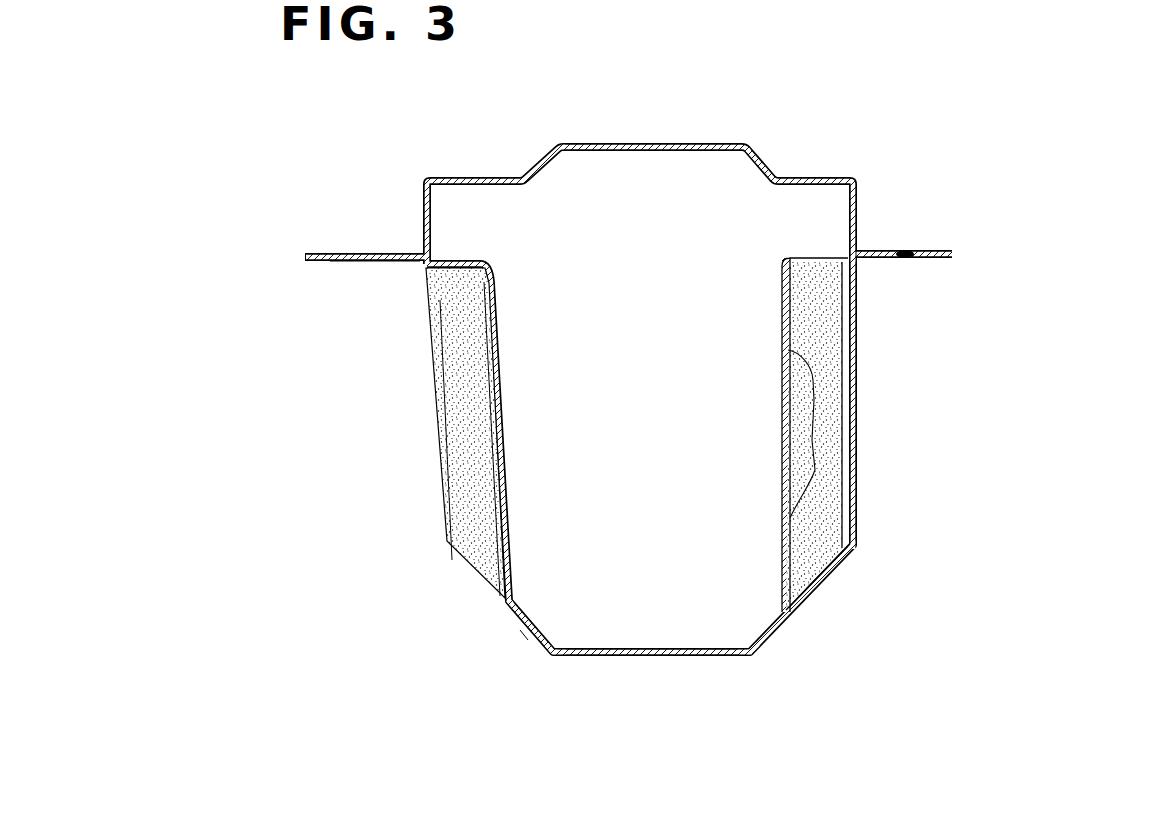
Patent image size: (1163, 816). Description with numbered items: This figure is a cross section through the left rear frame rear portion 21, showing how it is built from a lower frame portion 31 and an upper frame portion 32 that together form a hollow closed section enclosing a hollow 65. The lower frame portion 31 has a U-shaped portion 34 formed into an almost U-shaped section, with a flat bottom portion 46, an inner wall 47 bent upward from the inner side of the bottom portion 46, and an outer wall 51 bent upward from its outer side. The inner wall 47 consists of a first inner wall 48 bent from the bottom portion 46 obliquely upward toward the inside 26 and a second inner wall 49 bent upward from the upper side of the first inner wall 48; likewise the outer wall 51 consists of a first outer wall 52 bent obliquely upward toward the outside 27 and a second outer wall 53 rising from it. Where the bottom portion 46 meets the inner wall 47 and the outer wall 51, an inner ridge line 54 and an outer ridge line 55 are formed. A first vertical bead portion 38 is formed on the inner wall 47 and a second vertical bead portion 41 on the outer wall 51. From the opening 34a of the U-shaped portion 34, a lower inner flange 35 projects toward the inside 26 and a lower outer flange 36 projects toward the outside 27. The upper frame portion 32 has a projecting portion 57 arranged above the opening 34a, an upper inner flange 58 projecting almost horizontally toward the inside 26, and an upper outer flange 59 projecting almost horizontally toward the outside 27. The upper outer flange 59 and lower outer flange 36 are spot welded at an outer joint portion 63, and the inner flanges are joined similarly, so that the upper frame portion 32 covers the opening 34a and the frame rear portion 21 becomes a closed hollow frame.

The left rear frame rear portion 21 is at (1103, 90).
The inside 26 is at (230, 534).
The outside 27 is at (1102, 522).
The lower frame portion 31 is at (705, 471).
The upper frame portion 32 is at (701, 165).
The U-shaped portion 34 is at (432, 432).
The opening 34a is at (437, 258).
The lower inner flange 35 is at (352, 263).
The lower outer flange 36 is at (924, 262).
The first vertical bead portion 38 is at (455, 385).
The second vertical bead portion 41 is at (810, 393).
The bottom portion 46 is at (650, 659).
The inner wall 47 is at (435, 468).
The first inner wall 48 is at (462, 611).
The second inner wall 49 is at (445, 482).
The outer wall 51 is at (880, 454).
The first outer wall 52 is at (830, 575).
The second outer wall 53 is at (905, 402).
The inner ridge line 54 is at (556, 660).
The outer ridge line 55 is at (752, 658).
The projecting portion 57 is at (701, 143).
The upper inner flange 58 is at (355, 253).
The upper outer flange 59 is at (948, 250).
The outer joint portion 63 is at (905, 250).
The hollow 65 is at (650, 426).